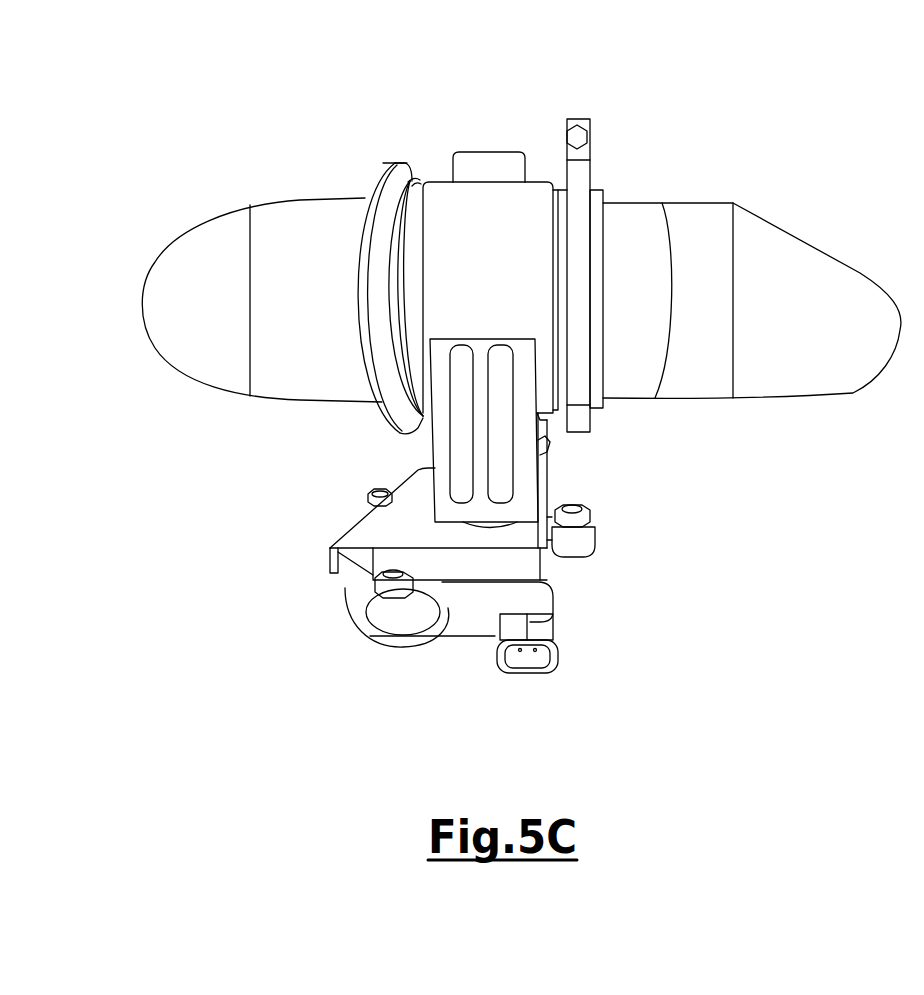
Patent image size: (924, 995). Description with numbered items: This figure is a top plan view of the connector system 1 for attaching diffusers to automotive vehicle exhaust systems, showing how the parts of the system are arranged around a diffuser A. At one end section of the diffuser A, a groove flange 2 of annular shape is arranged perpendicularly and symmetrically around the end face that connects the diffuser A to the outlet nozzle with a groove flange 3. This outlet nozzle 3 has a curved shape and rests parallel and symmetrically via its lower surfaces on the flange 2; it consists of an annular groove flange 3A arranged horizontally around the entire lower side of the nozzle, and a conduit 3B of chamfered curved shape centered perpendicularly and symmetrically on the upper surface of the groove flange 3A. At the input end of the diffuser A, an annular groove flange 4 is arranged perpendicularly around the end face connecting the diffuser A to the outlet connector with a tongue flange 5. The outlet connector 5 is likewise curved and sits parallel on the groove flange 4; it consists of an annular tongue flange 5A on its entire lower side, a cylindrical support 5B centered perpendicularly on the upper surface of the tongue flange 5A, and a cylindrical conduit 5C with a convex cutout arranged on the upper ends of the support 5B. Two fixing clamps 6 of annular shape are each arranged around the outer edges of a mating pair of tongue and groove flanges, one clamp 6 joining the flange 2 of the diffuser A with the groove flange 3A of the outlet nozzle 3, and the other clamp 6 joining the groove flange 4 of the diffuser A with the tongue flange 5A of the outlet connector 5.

The connector system 1 is at (384, 415).
The groove flange 2 is at (417, 183).
The outlet nozzle with groove flange 3 is at (189, 338).
The annular groove flange 3A is at (365, 207).
The conduit 3B is at (245, 353).
The annular groove flange 4 is at (559, 190).
The outlet connector with tongue flange 5 is at (818, 362).
The annular tongue flange 5A is at (605, 203).
The cylindrical support 5B is at (642, 362).
The cylindrical conduit 5C is at (733, 368).
The fixing clamp 6 is at (395, 167).
The diffuser A is at (550, 564).